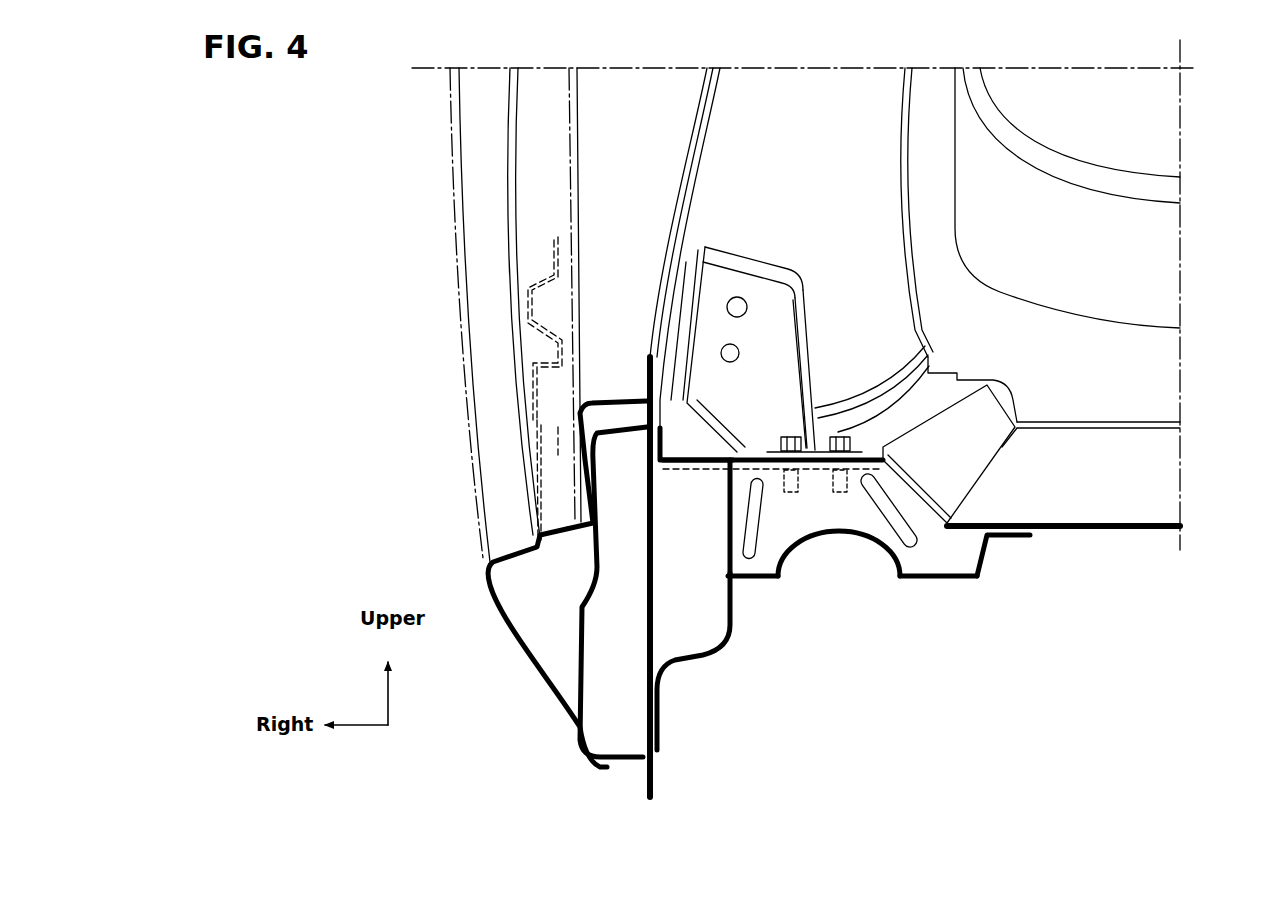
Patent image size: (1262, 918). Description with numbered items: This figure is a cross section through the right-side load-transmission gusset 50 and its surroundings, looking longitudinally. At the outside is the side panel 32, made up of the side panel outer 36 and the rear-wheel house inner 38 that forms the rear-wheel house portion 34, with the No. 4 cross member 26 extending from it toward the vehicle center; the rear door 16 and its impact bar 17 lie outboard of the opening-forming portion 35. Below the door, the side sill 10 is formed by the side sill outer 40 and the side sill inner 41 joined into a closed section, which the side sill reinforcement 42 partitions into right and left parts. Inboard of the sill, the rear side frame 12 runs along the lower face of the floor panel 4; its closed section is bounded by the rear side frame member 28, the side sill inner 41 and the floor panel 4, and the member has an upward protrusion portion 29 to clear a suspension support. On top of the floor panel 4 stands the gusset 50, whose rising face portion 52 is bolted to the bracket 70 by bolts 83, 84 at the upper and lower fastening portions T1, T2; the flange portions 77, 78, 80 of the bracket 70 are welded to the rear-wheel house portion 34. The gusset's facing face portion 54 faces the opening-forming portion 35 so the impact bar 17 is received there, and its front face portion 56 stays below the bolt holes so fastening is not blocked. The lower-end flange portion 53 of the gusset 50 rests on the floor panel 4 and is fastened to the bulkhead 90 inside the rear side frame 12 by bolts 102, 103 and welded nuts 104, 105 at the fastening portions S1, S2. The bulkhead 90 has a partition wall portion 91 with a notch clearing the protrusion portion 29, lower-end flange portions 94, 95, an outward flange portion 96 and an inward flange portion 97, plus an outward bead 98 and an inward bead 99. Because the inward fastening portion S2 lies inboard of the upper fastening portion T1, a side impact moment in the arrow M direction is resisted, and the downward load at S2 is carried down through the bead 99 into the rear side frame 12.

The floor panel 4 is at (1167, 483).
The side sill 10 is at (686, 680).
The rear side frame 12 is at (940, 580).
The rear door 16 is at (464, 378).
The impact bar 17 is at (532, 288).
The No. 4 cross member 26 is at (1092, 325).
The rear side frame member 28 is at (977, 578).
The upward protrusion portion 29 is at (866, 545).
The side panel 32 is at (452, 168).
The rear-wheel house portion 34 is at (895, 157).
The opening-forming portion 35 is at (682, 172).
The side panel outer 36 is at (518, 645).
The rear-wheel house inner 38 is at (810, 80).
The side sill outer 40 is at (578, 665).
The side sill inner 41 is at (722, 641).
The side sill reinforcement 42 is at (656, 600).
The gusset 50 is at (800, 352).
The rising face portion 52 is at (796, 374).
The lower-end flange portion 53 is at (860, 440).
The facing face portion 54 is at (690, 318).
The front face portion 56 is at (705, 468).
The bracket 70 is at (736, 323).
The flange portion 77 is at (722, 252).
The flange portion 78 is at (684, 288).
The flange portion 80 is at (803, 322).
The bolt 83 is at (742, 298).
The bolt 84 is at (740, 348).
The bulkhead 90 is at (921, 489).
The partition wall portion 91 is at (805, 540).
The lower-end flange portion 94 is at (756, 582).
The lower-end flange portion 95 is at (917, 580).
The outward flange portion 96 is at (724, 498).
The inward flange portion 97 is at (982, 548).
The outward bead 98 is at (740, 532).
The inward bead 99 is at (918, 522).
The bolt 102 is at (791, 436).
The bolt 103 is at (929, 366).
The nut 104 is at (790, 494).
The nut 105 is at (840, 494).
The arrow M direction M is at (816, 239).
The fastening portion S1 is at (776, 444).
The inward fastening portion S2 is at (836, 436).
The upper fastening portion T1 is at (727, 300).
The lower fastening portion T2 is at (720, 358).